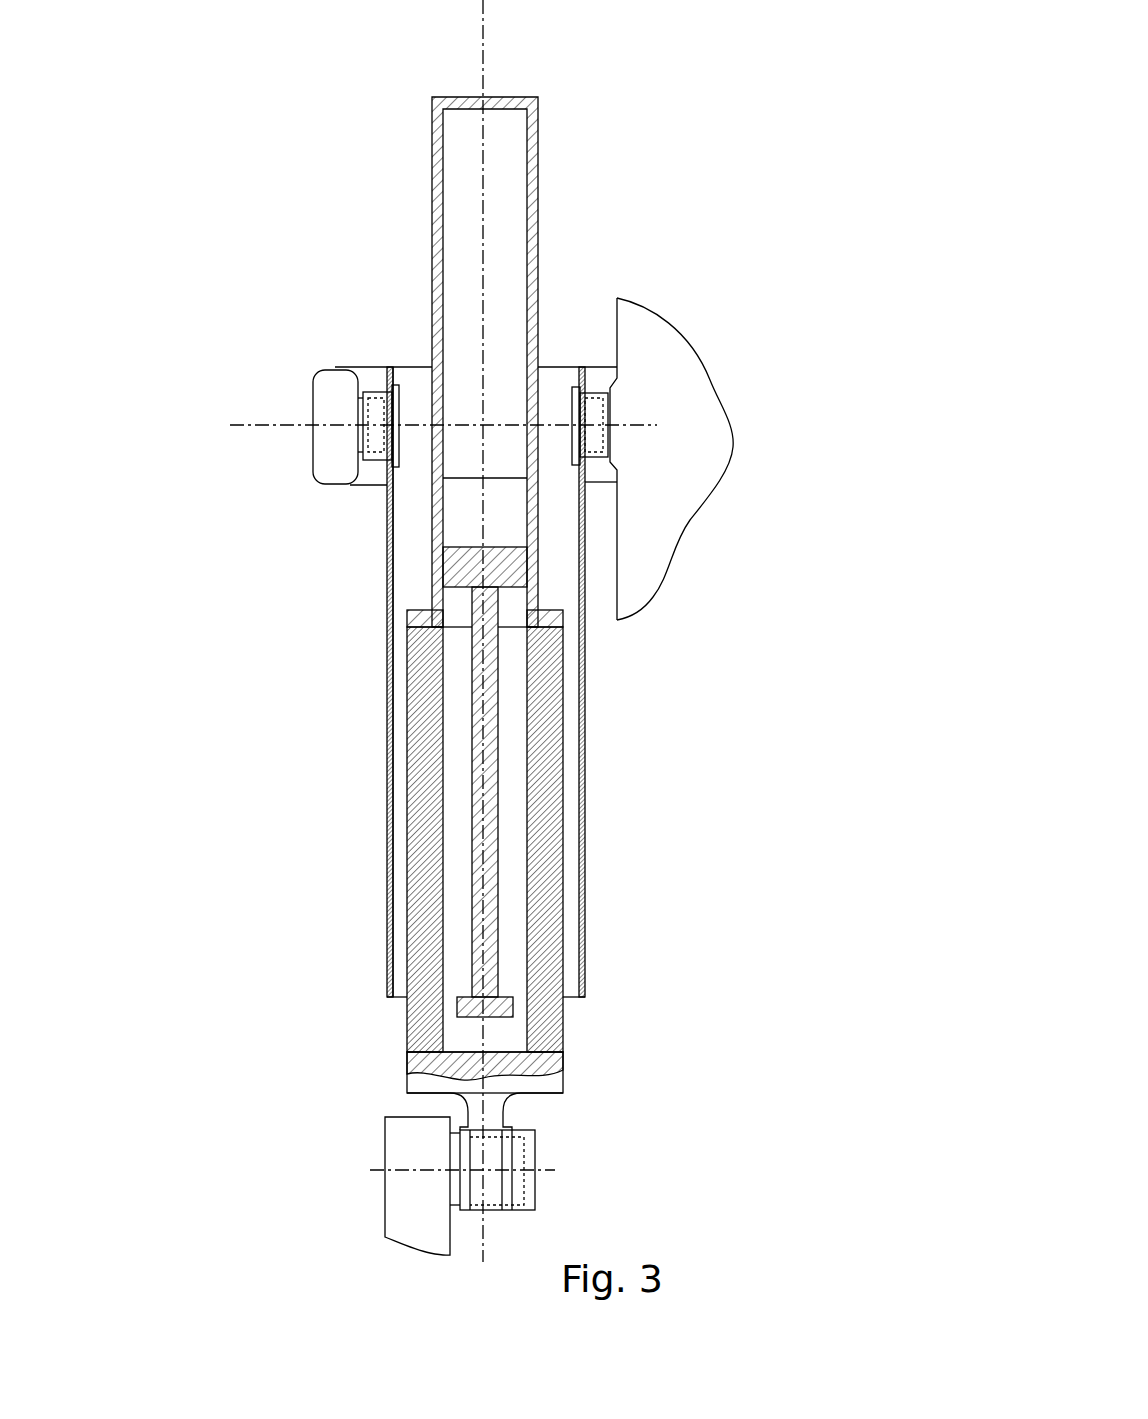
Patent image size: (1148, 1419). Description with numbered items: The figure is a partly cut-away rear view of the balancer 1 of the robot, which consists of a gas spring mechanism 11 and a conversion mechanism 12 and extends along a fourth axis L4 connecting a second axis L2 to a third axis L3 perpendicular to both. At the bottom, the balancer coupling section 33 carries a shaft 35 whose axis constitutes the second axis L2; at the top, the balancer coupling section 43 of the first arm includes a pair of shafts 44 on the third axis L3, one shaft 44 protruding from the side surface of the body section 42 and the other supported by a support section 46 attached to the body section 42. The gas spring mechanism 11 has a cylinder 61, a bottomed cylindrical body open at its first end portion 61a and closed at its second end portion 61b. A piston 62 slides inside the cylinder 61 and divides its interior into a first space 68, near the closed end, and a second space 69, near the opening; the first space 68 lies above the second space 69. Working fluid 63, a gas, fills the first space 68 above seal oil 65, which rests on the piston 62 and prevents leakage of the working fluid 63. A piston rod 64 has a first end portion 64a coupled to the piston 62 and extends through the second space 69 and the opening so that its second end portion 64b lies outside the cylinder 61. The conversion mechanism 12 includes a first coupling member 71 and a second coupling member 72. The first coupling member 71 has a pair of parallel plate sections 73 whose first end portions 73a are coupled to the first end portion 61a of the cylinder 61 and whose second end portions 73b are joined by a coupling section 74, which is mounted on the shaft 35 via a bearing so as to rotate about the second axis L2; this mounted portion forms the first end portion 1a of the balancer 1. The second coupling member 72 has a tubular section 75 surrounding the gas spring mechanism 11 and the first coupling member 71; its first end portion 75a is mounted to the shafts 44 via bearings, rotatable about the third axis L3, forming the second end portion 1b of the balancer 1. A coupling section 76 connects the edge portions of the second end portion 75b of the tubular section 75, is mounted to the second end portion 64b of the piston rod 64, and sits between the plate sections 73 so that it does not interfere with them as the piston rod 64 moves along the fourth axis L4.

The balancer 1 is at (443, 799).
The first end portion 1a is at (478, 1110).
The second end portion 1b is at (537, 468).
The gas spring mechanism 11 is at (489, 357).
The conversion mechanism 12 is at (514, 840).
The balancer coupling section 33 is at (400, 1142).
The shaft 35 is at (540, 1145).
The body section 42 is at (683, 483).
The balancer coupling section 43 is at (396, 376).
The shafts 44 is at (378, 400).
The support section 46 is at (332, 388).
The cylinder 61 is at (502, 349).
The first end portion 61a is at (430, 622).
The second end portion 61b is at (513, 97).
The piston 62 is at (468, 556).
The working fluid 63 is at (463, 146).
The piston rod 64 is at (387, 776).
The first end portion 64a is at (462, 595).
The second end portion 64b is at (460, 985).
The seal oil 65 is at (505, 518).
The first space 68 is at (505, 176).
The second space 69 is at (458, 598).
The first coupling member 71 is at (585, 688).
The second coupling member 72 is at (585, 763).
The plate sections 73 is at (497, 840).
The first end portions 73a is at (420, 663).
The second end portions 73b is at (407, 1040).
The coupling section 74 is at (555, 1078).
The tubular section 75 is at (533, 632).
The first end portion 75a is at (553, 390).
The second end portion 75b is at (575, 997).
The coupling section 76 is at (410, 1013).
The second axis L2 is at (560, 1170).
The third axis L3 is at (657, 425).
The fourth axis L4 is at (487, 50).